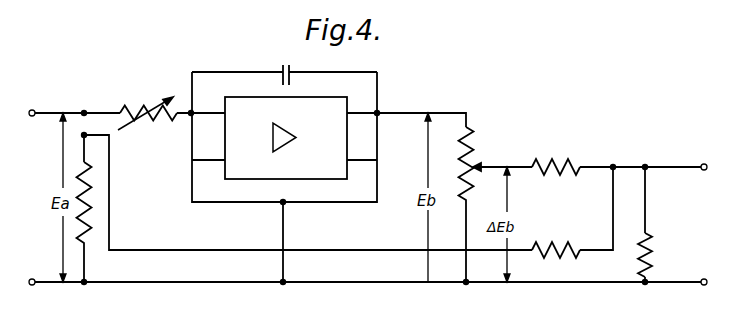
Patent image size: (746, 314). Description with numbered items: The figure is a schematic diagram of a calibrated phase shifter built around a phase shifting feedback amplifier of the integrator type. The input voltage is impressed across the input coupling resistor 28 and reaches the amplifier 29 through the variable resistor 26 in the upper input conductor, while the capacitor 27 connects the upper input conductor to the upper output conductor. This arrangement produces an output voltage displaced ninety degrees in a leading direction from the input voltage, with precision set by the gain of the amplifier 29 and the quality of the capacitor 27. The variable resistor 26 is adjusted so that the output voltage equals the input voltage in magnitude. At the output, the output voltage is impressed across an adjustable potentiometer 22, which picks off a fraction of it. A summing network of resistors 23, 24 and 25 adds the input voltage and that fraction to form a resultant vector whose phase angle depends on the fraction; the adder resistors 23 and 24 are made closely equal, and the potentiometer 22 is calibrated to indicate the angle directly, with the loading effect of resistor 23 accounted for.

The adjustable potentiometer 22 is at (470, 136).
The adder resistor 23 is at (550, 160).
The adder resistor 24 is at (552, 248).
The resistor 25 is at (653, 256).
The variable resistor 26 is at (142, 106).
The capacitor 27 is at (294, 62).
The input coupling resistor 28 is at (87, 240).
The amplifier 29 is at (267, 172).